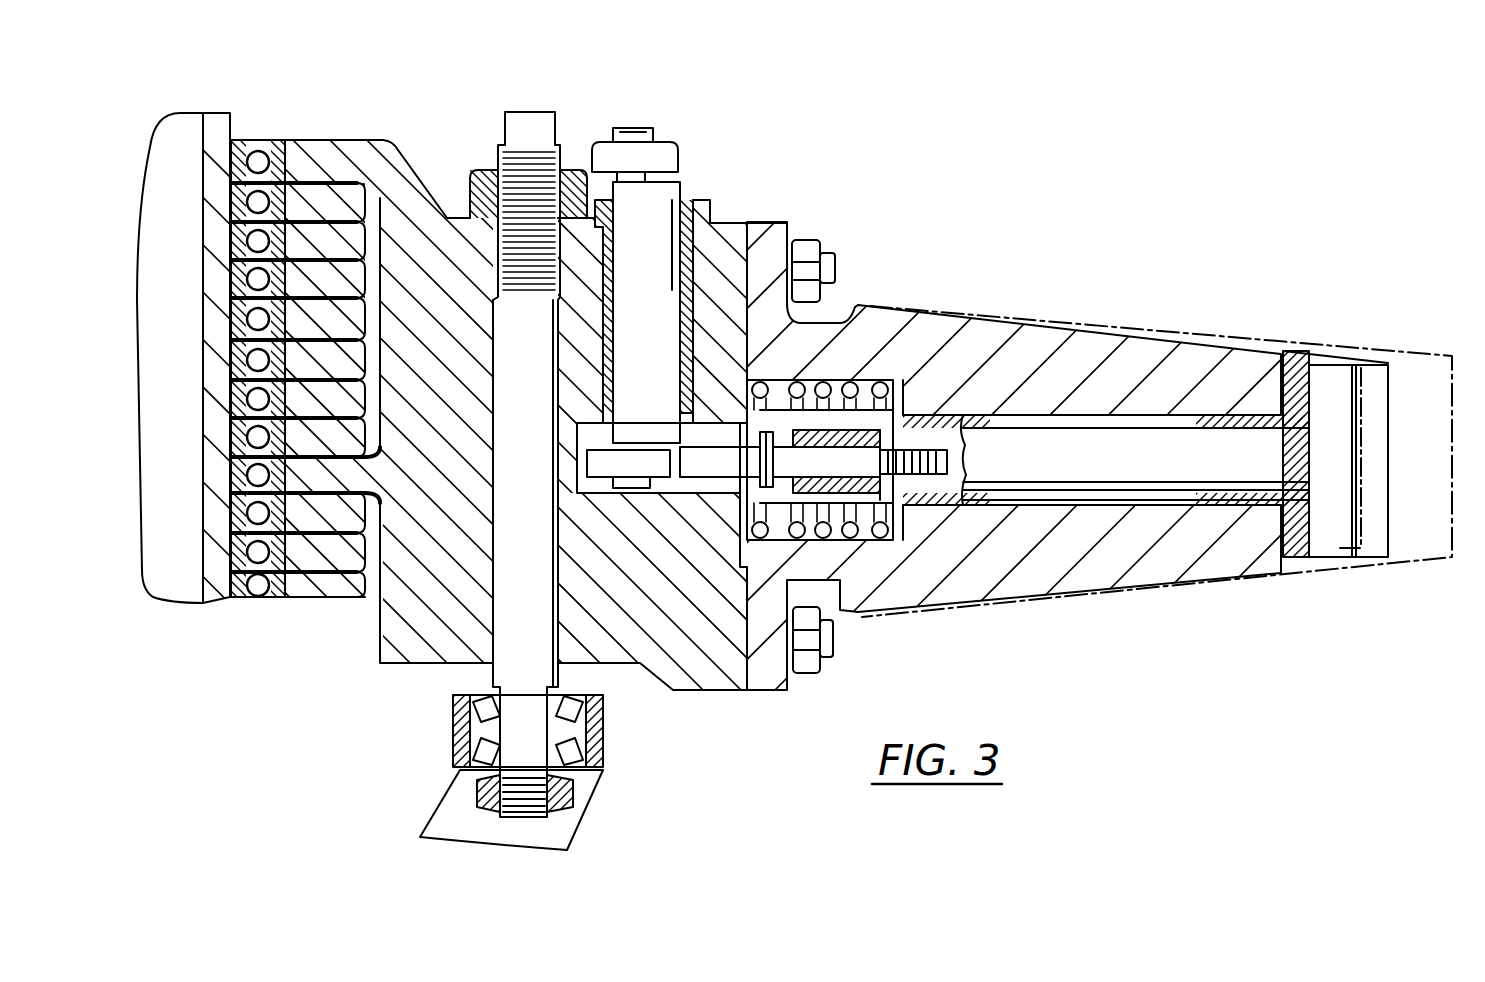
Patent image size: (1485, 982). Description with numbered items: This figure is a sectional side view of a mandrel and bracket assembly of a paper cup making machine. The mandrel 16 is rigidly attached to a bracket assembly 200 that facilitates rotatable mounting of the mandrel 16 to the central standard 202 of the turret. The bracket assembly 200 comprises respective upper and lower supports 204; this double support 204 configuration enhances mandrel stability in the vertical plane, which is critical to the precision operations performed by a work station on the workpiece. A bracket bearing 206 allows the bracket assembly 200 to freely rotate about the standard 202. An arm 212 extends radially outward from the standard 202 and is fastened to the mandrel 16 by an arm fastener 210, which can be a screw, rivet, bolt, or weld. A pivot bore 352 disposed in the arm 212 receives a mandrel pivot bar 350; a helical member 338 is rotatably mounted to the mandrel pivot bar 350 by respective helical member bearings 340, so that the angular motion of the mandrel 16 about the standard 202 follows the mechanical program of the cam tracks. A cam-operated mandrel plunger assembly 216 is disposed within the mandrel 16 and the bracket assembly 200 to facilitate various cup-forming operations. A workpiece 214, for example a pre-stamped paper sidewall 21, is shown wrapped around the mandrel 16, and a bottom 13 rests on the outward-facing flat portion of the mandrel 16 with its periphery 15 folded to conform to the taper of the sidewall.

The bracket assembly 200 is at (368, 652).
The standard 202 is at (229, 118).
The supports 204 is at (352, 140).
The bracket bearing 206 is at (265, 150).
The arm fastener 210 is at (820, 238).
The arm 212 is at (742, 213).
The workpiece 214 is at (1405, 352).
The cam-operated mandrel plunger assembly 216 is at (710, 160).
The bottom 13 is at (1361, 440).
The periphery 15 is at (1373, 545).
The mandrel 16 is at (1150, 336).
The paper sidewall 21 is at (1280, 308).
The helical member 338 is at (590, 812).
The helical member bearings 340 is at (605, 745).
The mandrel pivot bar 350 is at (500, 632).
The pivot bore 352 is at (500, 378).